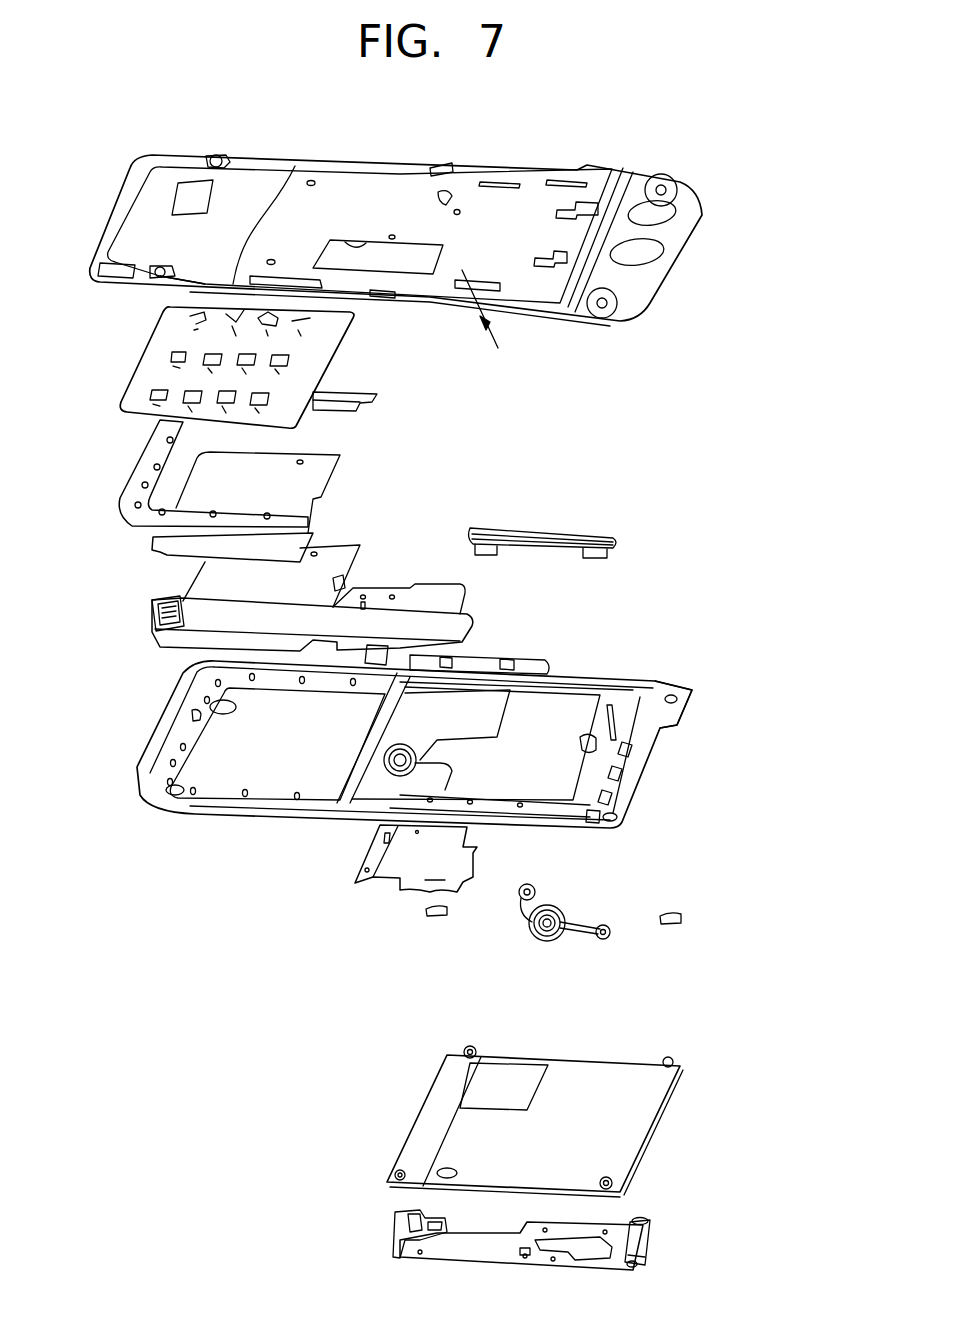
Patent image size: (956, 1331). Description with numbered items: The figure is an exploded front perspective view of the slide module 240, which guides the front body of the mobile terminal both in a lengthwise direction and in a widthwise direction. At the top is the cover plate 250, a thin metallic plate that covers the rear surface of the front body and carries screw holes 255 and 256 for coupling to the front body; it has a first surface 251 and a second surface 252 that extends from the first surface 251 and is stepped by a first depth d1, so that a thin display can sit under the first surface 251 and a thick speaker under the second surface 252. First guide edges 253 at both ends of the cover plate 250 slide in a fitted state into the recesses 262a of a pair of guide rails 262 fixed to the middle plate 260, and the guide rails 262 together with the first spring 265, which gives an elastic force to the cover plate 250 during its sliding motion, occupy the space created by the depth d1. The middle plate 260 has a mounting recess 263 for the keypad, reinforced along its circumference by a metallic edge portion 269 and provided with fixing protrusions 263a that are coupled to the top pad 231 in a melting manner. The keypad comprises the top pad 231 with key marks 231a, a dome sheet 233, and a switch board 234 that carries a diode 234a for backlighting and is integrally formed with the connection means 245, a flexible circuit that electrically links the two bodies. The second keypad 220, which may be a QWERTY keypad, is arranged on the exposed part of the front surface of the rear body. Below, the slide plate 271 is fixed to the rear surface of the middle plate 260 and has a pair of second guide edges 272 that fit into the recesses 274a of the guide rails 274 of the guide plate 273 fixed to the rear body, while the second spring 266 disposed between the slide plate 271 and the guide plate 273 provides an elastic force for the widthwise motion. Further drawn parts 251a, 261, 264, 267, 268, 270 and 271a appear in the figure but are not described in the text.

The second keypad 220 is at (214, 367).
The top pad 231 is at (165, 330).
The key marks 231a is at (152, 390).
The dome sheet 233 is at (165, 540).
The switch board 234 is at (190, 582).
The diode 234a is at (343, 562).
The slide module 240 is at (710, 547).
The connection means 245 is at (372, 618).
The cover plate 250 is at (678, 264).
The first surface 251 is at (530, 186).
The opening of plate 251a is at (355, 243).
The second surface 252 is at (672, 233).
The first guide edges 253 is at (296, 166).
The screw holes 255 is at (160, 268).
The screw holes 256 is at (603, 300).
The middle plate 260 is at (412, 765).
The frame end tab 261 is at (670, 712).
The guide rails 262 is at (530, 660).
The recesses 262a is at (484, 531).
The mounting recess 263 is at (263, 786).
The fixing protrusions 263a is at (170, 763).
The frame rim 264 is at (150, 800).
The first spring 265 is at (386, 764).
The second spring 266 is at (545, 935).
The flexible circuit 267 is at (392, 876).
The clip 268 is at (433, 918).
The metallic edge portion 269 is at (146, 455).
The cover module 270 is at (560, 1156).
The slide plate 271 is at (590, 1070).
The cover opening 271a is at (470, 1104).
The second guide edges 272 is at (618, 1155).
The guide plate 273 is at (460, 1260).
The guide rails 274 is at (398, 1242).
The recesses 274a is at (638, 1265).
The first depth d1 is at (477, 309).